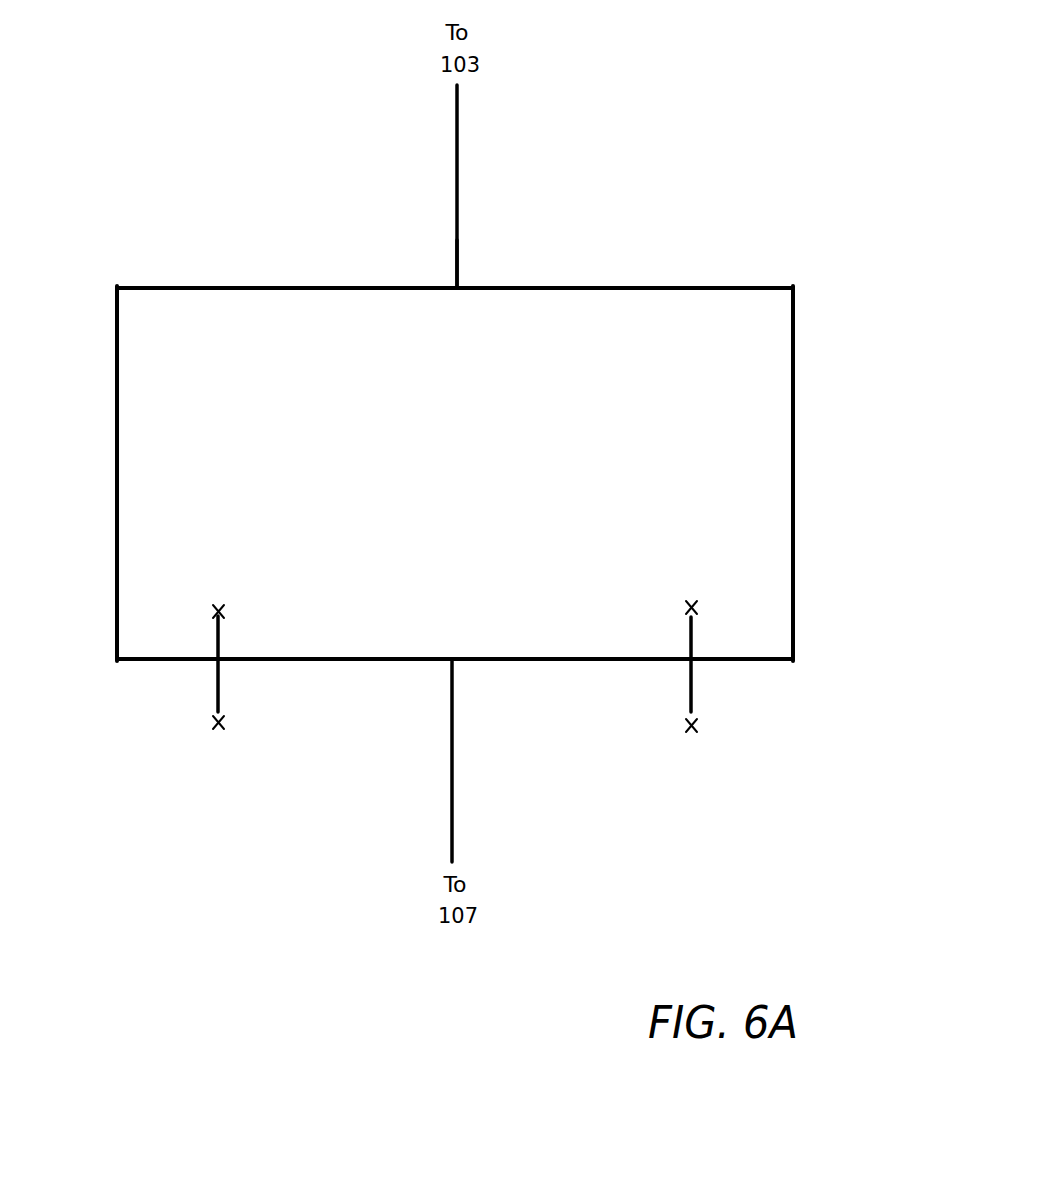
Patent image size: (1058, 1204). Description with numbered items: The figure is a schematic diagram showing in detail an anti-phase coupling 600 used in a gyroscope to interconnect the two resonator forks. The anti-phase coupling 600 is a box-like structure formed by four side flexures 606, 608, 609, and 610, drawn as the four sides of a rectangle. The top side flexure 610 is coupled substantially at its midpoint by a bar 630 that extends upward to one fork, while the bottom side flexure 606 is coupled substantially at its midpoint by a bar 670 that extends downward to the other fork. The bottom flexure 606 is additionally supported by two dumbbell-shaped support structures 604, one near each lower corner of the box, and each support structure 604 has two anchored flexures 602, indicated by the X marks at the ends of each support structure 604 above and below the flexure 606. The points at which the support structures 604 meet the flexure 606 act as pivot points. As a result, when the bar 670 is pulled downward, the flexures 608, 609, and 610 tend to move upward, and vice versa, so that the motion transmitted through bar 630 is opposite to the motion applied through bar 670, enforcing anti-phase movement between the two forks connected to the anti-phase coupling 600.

The anti-phase coupling 600 is at (457, 454).
The anchored flexures 602 is at (226, 603).
The dumbbell-shaped support structures 604 is at (216, 686).
The side flexure 606 is at (373, 661).
The side flexure 608 is at (116, 514).
The side flexure 609 is at (796, 455).
The side flexure 610 is at (460, 280).
The bar 630 is at (459, 146).
The bar 670 is at (506, 810).